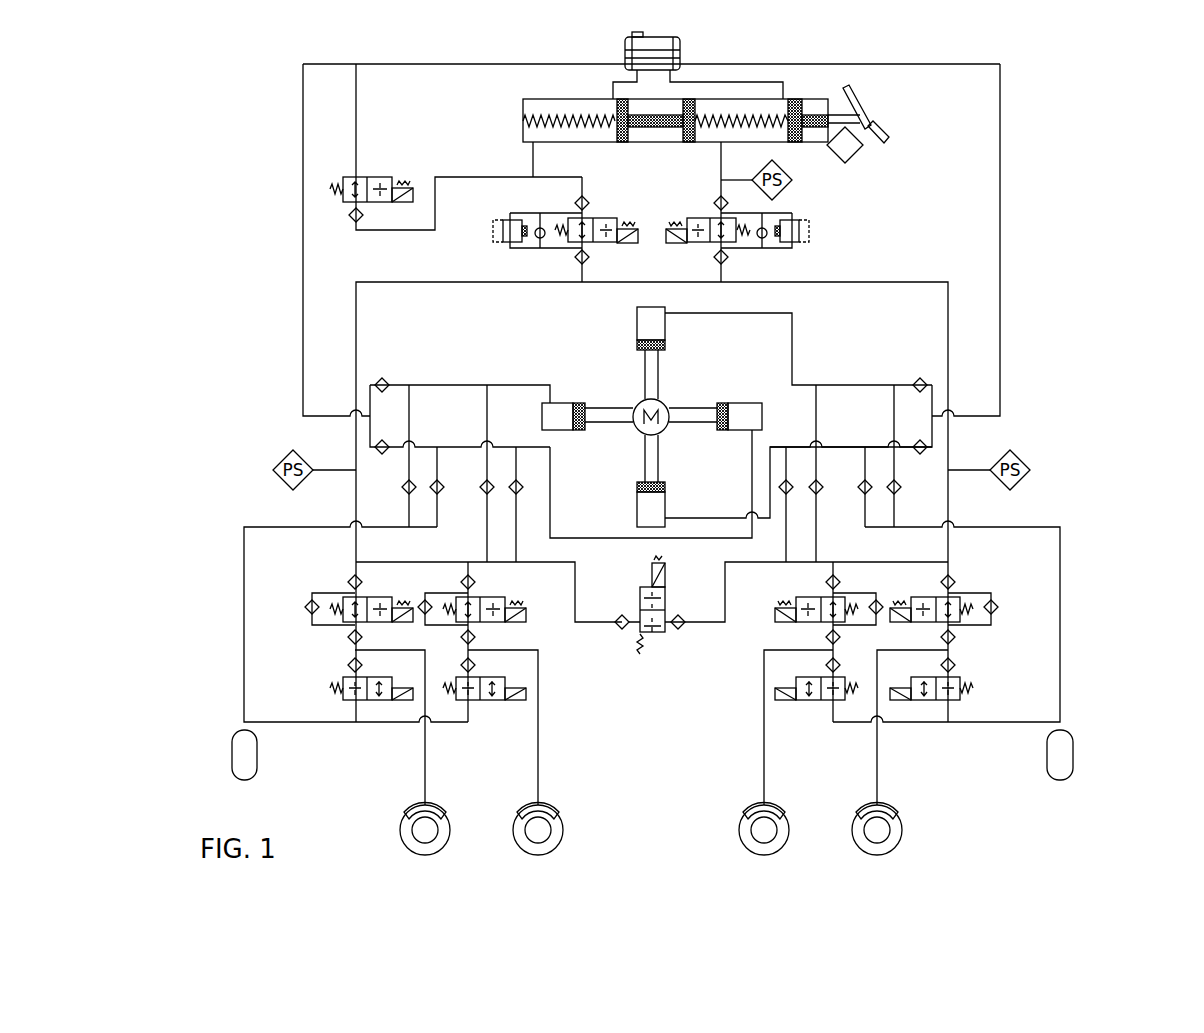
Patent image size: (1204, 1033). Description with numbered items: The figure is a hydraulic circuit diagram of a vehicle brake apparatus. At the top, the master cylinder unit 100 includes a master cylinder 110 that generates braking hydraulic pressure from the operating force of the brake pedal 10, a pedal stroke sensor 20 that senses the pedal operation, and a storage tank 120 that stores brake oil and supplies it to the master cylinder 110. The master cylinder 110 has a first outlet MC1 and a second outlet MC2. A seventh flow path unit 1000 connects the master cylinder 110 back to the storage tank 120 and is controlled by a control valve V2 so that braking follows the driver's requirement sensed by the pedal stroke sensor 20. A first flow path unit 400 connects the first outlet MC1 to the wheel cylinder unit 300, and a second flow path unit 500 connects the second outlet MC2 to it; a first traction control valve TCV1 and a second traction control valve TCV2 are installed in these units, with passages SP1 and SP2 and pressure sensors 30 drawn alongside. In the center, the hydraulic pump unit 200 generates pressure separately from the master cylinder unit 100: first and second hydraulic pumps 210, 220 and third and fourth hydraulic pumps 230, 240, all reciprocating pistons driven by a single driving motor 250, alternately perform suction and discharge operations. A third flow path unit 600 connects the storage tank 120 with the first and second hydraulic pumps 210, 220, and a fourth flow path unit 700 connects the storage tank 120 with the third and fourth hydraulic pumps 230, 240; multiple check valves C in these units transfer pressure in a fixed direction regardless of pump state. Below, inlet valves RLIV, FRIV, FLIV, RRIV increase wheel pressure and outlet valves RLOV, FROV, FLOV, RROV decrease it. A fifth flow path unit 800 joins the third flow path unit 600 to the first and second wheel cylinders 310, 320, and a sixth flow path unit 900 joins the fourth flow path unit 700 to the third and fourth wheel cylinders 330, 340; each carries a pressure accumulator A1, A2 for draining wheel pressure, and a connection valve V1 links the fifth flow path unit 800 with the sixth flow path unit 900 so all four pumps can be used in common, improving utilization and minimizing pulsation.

The seventh flow path unit 1000 is at (356, 100).
The master cylinder unit 100 is at (802, 86).
The master cylinder 110 is at (672, 83).
The storage tank 120 is at (625, 50).
The brake pedal 10 is at (860, 104).
The pedal stroke sensor 20 is at (855, 160).
The pressure sensor 30 is at (782, 190).
The first outlet MC1 is at (725, 143).
The second outlet MC2 is at (533, 142).
The control valve V2 is at (373, 177).
The first traction control valve TCV1 is at (736, 236).
The second traction control valve TCV2 is at (568, 229).
The first simulation passage SP1 is at (702, 267).
The second simulation passage SP2 is at (602, 267).
The second flow path unit 500 is at (425, 282).
The first flow path unit 400 is at (880, 282).
The fourth flow path unit 700 is at (303, 300).
The third flow path unit 600 is at (1000, 320).
The hydraulic pump unit 200 is at (737, 422).
The first hydraulic pump 210 is at (665, 315).
The second hydraulic pump 220 is at (665, 505).
The third hydraulic pump 230 is at (560, 403).
The fourth hydraulic pump 240 is at (745, 408).
The driving motor 250 is at (665, 407).
The check valve C is at (386, 445).
The fifth flow path unit 800 is at (1060, 582).
The sixth flow path unit 900 is at (244, 615).
The inlet valve RLIV is at (359, 608).
The inlet valve FRIV is at (472, 642).
The inlet valve FLIV is at (825, 642).
The inlet valve RRIV is at (938, 608).
The outlet valve RLOV is at (362, 727).
The outlet valve FROV is at (483, 727).
The outlet valve FLOV is at (811, 727).
The outlet valve RROV is at (925, 727).
The connection valve V1 is at (662, 632).
The pressure accumulator A1 is at (1060, 755).
The pressure accumulator A2 is at (245, 755).
The wheel cylinder unit 300 is at (675, 852).
The first wheel cylinder 310 is at (902, 828).
The second wheel cylinder 320 is at (789, 828).
The third wheel cylinder 330 is at (563, 828).
The fourth wheel cylinder 340 is at (450, 828).